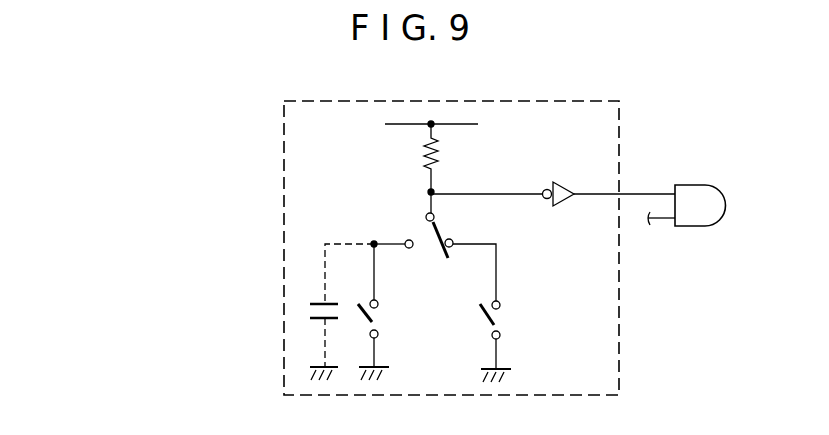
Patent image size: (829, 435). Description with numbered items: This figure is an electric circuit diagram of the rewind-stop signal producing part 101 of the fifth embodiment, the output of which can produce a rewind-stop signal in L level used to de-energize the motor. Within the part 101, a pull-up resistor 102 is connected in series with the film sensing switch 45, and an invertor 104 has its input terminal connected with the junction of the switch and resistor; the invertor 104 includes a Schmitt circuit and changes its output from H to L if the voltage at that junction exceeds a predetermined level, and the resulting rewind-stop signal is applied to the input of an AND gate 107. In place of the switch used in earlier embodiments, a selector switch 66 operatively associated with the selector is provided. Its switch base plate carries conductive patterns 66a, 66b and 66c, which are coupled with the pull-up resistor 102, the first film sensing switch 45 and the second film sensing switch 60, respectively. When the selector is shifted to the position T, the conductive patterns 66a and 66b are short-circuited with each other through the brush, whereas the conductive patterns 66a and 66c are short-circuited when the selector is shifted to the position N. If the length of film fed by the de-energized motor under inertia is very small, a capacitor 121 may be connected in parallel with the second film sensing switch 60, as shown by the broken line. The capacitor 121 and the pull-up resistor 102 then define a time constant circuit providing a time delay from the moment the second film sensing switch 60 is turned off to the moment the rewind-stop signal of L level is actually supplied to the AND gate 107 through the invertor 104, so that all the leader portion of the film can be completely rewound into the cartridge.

The rewind-stop signal producing part 101 is at (622, 147).
The pull-up resistor 102 is at (445, 153).
The invertor 104 is at (561, 204).
The AND gate 107 is at (705, 185).
The selector switch 66 is at (429, 247).
The conductive pattern 66a is at (427, 213).
The conductive pattern 66b is at (468, 270).
The conductive pattern 66c is at (409, 248).
The capacitor 121 is at (312, 312).
The second film sensing switch 60 is at (383, 322).
The film sensing switch 45 is at (500, 321).